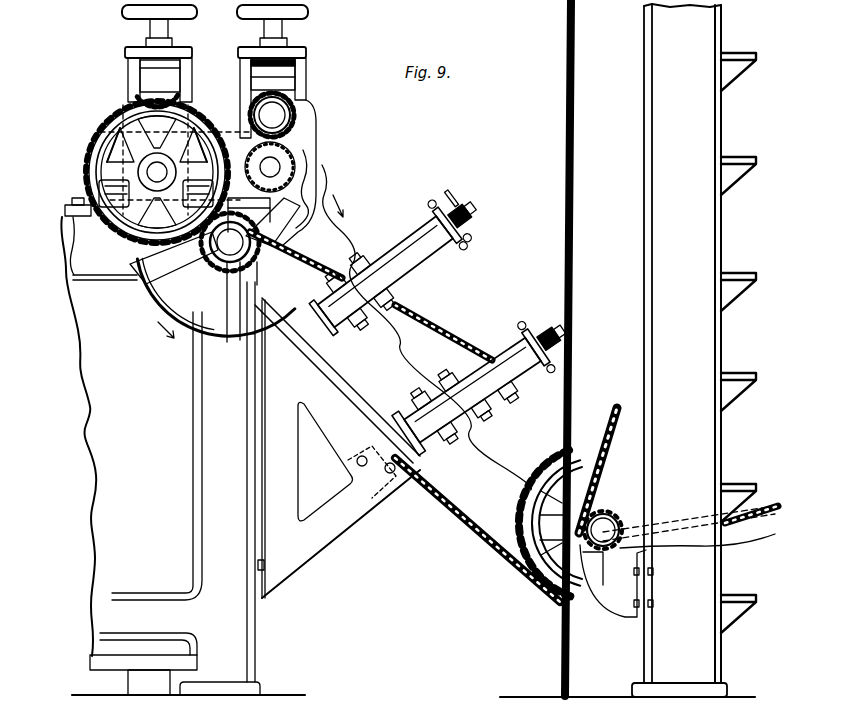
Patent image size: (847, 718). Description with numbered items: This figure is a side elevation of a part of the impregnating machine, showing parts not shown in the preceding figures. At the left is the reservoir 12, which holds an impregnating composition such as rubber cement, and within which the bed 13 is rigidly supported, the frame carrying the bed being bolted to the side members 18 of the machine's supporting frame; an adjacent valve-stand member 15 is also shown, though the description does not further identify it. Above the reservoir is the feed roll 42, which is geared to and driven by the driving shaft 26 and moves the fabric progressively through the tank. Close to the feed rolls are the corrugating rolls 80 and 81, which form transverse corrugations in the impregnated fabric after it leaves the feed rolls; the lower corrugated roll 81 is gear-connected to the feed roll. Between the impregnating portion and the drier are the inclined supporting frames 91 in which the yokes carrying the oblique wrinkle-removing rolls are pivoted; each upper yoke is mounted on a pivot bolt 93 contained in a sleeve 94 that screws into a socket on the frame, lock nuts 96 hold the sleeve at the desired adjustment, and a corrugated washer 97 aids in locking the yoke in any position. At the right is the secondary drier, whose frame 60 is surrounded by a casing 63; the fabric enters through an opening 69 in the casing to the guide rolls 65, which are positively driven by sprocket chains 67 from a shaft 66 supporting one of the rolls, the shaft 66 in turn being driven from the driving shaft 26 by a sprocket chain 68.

The reservoir 12 is at (240, 445).
The bed 13 is at (130, 90).
The valve stand 15 is at (233, 140).
The side members 18 is at (72, 204).
The driving shaft 26 is at (215, 270).
The feed roll 42 is at (96, 142).
The frame 60 is at (651, 295).
The casing 63 is at (576, 178).
The guide rolls 65 is at (604, 511).
The shaft 66 is at (603, 548).
The sprocket chains 67 is at (760, 519).
The sprocket chain 68 is at (492, 540).
The opening 69 is at (535, 587).
The corrugating roll 80 is at (294, 108).
The corrugating roll 81 is at (292, 160).
The supporting frame 91 is at (414, 277).
The pivot bolt 93 is at (470, 206).
The sleeve 94 is at (449, 198).
The lock nuts 96 is at (466, 238).
The corrugated washer 97 is at (412, 296).